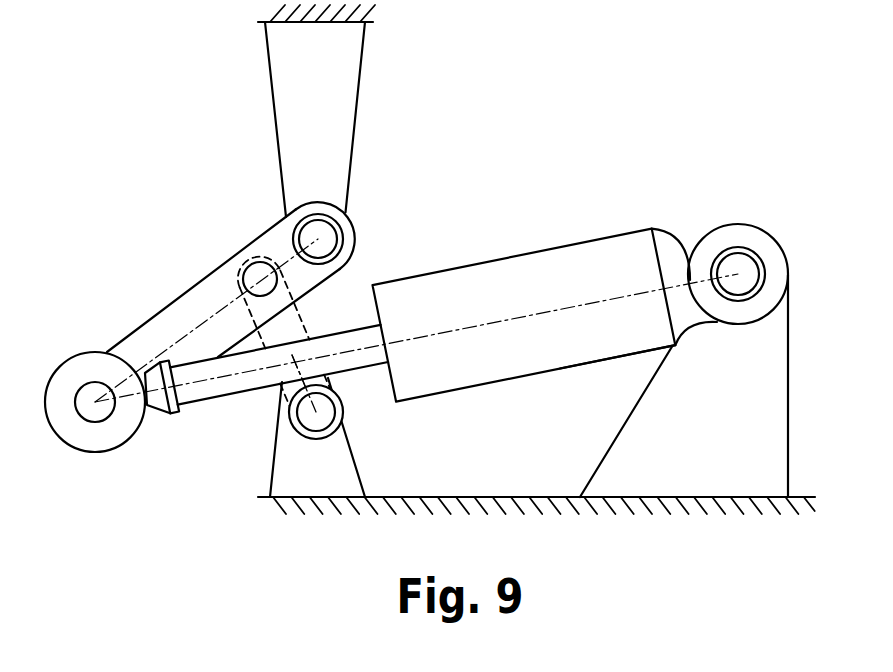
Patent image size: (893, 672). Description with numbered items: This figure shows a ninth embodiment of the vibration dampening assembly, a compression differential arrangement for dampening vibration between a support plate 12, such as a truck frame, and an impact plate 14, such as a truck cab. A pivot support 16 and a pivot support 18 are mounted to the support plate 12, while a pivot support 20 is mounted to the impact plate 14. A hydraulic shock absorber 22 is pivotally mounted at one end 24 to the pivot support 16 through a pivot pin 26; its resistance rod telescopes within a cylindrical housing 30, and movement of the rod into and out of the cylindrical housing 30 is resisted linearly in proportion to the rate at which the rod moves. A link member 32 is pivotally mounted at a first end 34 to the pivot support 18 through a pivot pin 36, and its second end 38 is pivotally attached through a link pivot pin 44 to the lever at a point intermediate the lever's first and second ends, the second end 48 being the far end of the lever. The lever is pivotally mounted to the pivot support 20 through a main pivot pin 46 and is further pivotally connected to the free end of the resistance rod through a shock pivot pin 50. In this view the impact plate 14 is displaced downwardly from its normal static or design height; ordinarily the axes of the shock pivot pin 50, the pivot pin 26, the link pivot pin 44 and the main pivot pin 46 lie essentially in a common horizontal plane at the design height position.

The support plate 12 is at (465, 496).
The impact plate 14 is at (347, 23).
The pivot support 16 is at (633, 402).
The pivot support 18 is at (358, 454).
The pivot support 20 is at (357, 121).
The hydraulic shock absorber 22 is at (503, 258).
The end of shock absorber 24 is at (682, 240).
The pivot pin 26 is at (738, 274).
The cylindrical housing 30 is at (503, 381).
The link member 32 is at (302, 321).
The first end of link member 34 is at (330, 383).
The pivot pin 36 is at (310, 418).
The second end of link member 38 is at (237, 270).
The link pivot pin 44 is at (292, 355).
The main pivot pin 46 is at (338, 228).
The second end of lever member 48 is at (84, 352).
The shock pivot pin 50 is at (100, 404).